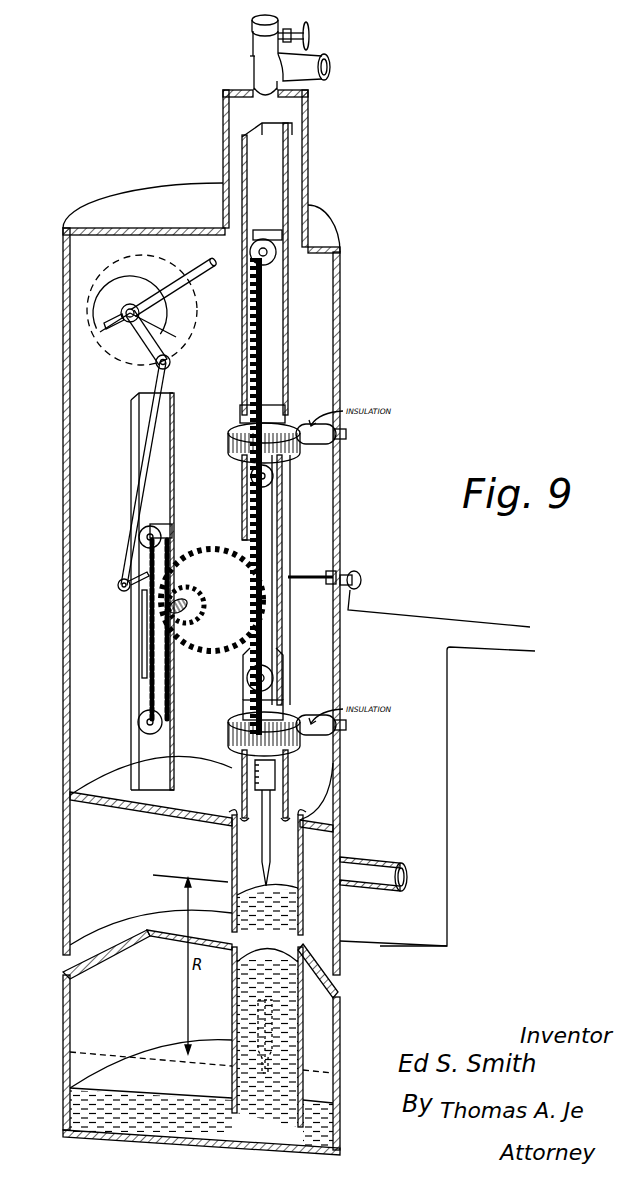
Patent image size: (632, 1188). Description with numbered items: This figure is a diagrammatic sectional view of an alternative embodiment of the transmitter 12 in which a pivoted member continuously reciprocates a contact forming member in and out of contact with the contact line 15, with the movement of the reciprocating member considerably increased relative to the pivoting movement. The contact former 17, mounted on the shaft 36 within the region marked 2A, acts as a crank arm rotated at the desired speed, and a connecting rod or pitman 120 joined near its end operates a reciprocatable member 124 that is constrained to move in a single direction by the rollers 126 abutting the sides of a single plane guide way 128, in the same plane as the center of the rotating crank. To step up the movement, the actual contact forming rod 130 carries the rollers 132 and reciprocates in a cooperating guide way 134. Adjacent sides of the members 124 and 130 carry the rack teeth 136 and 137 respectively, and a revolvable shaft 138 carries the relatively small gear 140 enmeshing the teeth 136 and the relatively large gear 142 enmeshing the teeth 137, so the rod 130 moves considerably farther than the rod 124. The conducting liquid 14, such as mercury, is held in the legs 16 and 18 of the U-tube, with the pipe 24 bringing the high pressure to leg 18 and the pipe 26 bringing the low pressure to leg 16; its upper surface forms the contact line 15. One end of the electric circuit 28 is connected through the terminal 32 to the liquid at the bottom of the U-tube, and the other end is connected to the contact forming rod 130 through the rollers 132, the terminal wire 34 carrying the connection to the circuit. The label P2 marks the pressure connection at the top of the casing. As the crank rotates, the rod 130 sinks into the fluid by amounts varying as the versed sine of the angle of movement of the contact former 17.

The transmitter 12 is at (338, 538).
The pressure fitting P2 is at (270, 55).
The pipe 24 is at (330, 82).
The guide way 134 is at (290, 303).
The contact forming rod 130 is at (268, 642).
The rollers 132 is at (258, 257).
The rack teeth 137 is at (256, 490).
The large gear 142 is at (227, 537).
The detail circle 2A is at (142, 310).
The shaft 36 is at (163, 290).
The contact former 17 is at (144, 306).
The connecting rod 120 is at (148, 453).
The reciprocatable member 124 is at (148, 610).
The guide way 128 is at (132, 486).
The rack teeth 136 is at (168, 688).
The rollers 126 is at (162, 528).
The small gear 140 is at (180, 590).
The revolvable shaft 138 is at (182, 612).
The terminal wire 34 is at (358, 603).
The electric circuit 28 is at (490, 632).
The terminal 32 is at (375, 947).
The pipe 26 is at (388, 866).
The contact line 15 is at (290, 888).
The high pressure leg 18 is at (76, 1070).
The conducting liquid 14 is at (290, 1030).
The low pressure leg 16 is at (295, 1047).